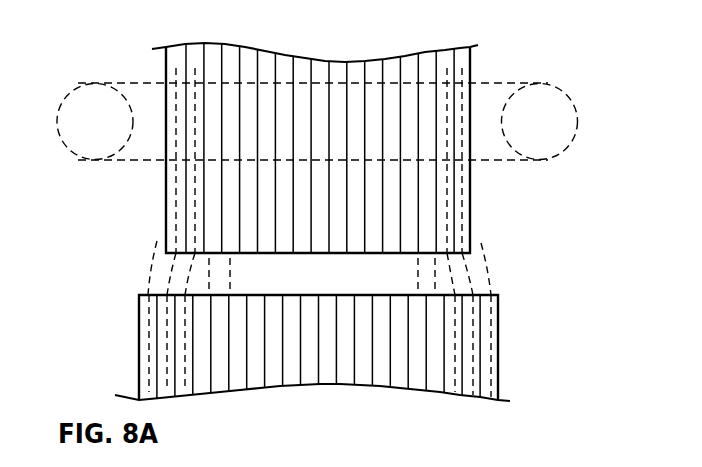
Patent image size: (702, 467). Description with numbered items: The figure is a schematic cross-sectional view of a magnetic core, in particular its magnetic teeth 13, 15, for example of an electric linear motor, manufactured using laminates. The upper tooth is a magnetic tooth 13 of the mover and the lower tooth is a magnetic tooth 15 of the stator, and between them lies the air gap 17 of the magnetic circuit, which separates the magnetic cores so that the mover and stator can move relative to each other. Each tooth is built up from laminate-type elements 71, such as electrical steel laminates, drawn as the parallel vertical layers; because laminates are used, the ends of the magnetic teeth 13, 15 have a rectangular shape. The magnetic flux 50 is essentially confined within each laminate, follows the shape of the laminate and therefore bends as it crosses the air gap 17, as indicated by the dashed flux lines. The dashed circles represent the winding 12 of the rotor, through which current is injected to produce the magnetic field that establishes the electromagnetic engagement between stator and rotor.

The winding 12 is at (143, 100).
The magnetic tooth of the rotor 13 is at (492, 204).
The magnetic tooth of the stator 15 is at (118, 290).
The air gap 17 is at (286, 257).
The magnetic flux 50 is at (178, 215).
The laminate-type element 71 is at (460, 58).